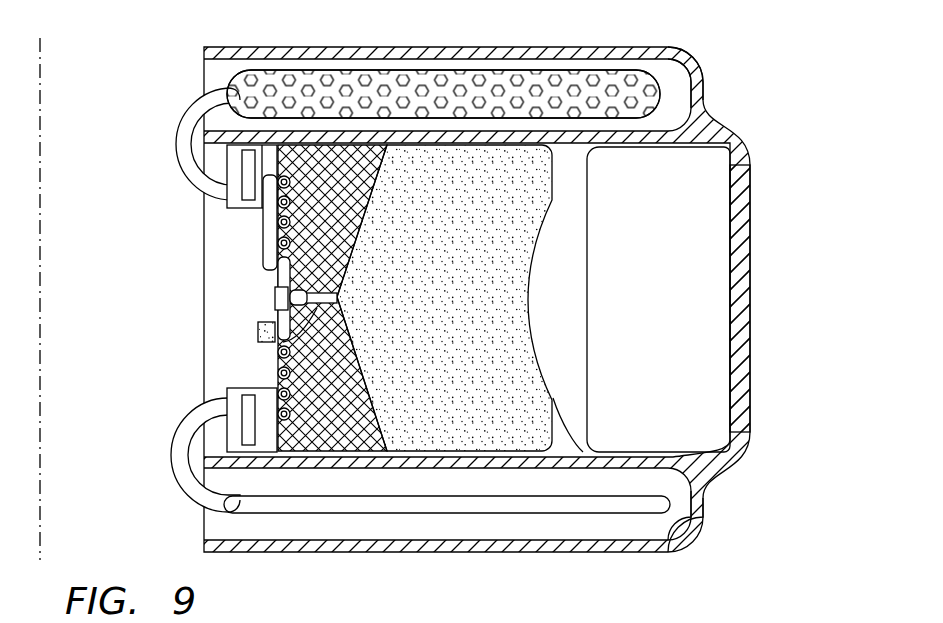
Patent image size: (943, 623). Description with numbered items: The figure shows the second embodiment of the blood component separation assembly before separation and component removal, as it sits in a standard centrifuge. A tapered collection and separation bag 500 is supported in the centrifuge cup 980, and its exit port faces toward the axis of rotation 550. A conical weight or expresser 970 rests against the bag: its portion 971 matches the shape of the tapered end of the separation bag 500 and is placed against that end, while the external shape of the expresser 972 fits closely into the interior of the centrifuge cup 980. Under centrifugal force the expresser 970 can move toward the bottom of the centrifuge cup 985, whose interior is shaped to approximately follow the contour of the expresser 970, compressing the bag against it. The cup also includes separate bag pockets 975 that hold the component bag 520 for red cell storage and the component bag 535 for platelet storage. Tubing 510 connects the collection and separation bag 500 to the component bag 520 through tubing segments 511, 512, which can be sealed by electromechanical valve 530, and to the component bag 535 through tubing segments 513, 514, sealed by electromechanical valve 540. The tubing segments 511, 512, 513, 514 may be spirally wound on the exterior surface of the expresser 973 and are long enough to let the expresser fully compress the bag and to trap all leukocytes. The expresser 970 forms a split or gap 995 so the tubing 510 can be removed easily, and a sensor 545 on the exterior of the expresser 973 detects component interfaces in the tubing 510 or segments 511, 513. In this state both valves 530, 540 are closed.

The collection and separation bag 500 is at (553, 172).
The tubing 510 is at (277, 287).
The tubing segment 511 is at (263, 212).
The tubing segment 512 is at (177, 130).
The tubing segment 513 is at (277, 363).
The tubing segment 514 is at (172, 467).
The component bag 520 is at (573, 72).
The electromechanical valve 530 is at (227, 199).
The component bag 535 is at (622, 507).
The electromechanical valve 540 is at (227, 397).
The sensor 545 is at (258, 330).
The axis of rotation 550 is at (41, 67).
The expresser 970 is at (320, 157).
The portion of the expresser 971 is at (393, 150).
The external shape of the expresser 972 is at (277, 125).
The exterior surface of the expresser 973 is at (282, 305).
The bag pockets 975 is at (678, 90).
The centrifuge cup 980 is at (750, 438).
The bottom portion of the centrifuge cup 985 is at (528, 303).
The split or gap 995 is at (279, 348).